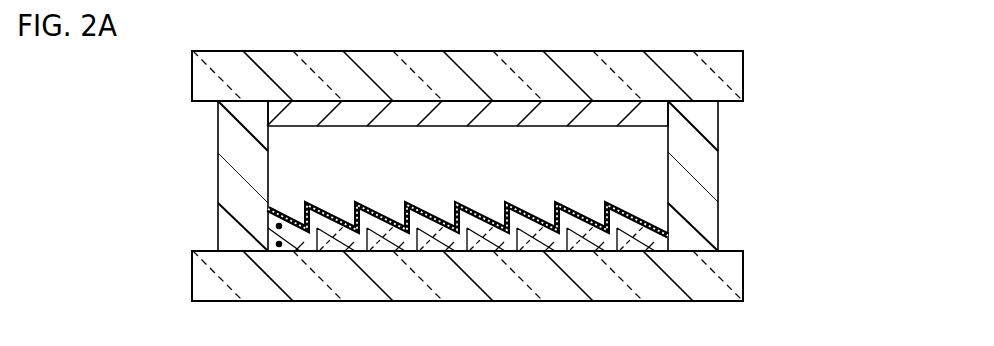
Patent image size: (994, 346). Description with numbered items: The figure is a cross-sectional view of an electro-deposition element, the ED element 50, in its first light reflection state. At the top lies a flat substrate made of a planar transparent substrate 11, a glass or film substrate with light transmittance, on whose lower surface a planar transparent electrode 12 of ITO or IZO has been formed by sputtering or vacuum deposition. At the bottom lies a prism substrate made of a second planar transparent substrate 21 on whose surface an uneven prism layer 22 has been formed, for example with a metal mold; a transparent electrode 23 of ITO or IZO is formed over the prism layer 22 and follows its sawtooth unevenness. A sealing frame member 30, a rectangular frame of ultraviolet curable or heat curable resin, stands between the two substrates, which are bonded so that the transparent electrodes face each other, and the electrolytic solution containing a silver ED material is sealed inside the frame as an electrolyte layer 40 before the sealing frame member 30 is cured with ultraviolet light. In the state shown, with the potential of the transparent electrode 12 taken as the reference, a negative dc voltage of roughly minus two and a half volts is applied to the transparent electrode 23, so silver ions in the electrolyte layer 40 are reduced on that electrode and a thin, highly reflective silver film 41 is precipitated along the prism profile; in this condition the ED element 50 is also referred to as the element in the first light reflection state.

The transparent substrate 11 is at (520, 71).
The transparent electrode 12 is at (392, 130).
The transparent substrate 21 is at (520, 271).
The prism layer 22 is at (279, 244).
The transparent electrode 23 is at (279, 226).
The sealing frame member 30 is at (500, 176).
The electrolyte layer 40 is at (652, 207).
The thin silver film 41 is at (338, 212).
The ED element 50 is at (496, 184).